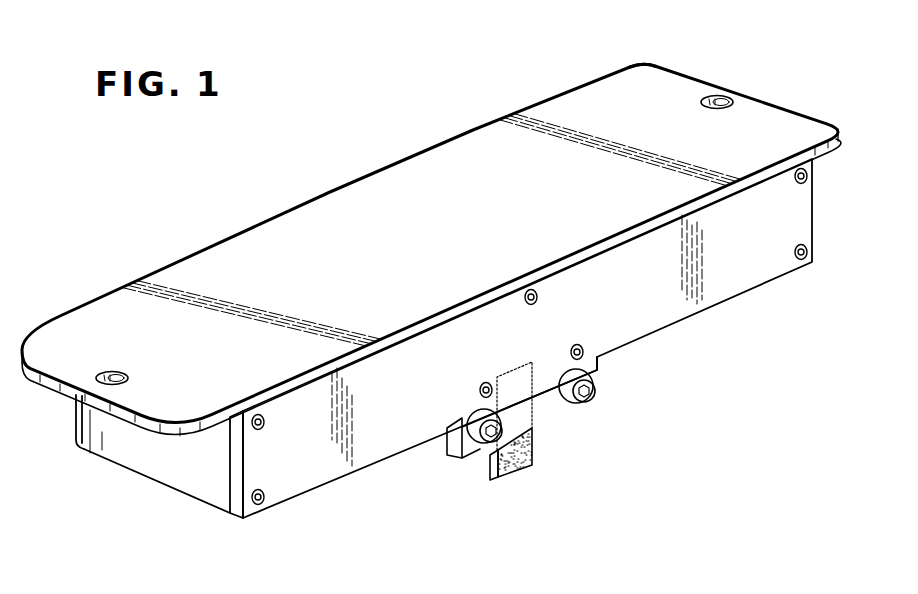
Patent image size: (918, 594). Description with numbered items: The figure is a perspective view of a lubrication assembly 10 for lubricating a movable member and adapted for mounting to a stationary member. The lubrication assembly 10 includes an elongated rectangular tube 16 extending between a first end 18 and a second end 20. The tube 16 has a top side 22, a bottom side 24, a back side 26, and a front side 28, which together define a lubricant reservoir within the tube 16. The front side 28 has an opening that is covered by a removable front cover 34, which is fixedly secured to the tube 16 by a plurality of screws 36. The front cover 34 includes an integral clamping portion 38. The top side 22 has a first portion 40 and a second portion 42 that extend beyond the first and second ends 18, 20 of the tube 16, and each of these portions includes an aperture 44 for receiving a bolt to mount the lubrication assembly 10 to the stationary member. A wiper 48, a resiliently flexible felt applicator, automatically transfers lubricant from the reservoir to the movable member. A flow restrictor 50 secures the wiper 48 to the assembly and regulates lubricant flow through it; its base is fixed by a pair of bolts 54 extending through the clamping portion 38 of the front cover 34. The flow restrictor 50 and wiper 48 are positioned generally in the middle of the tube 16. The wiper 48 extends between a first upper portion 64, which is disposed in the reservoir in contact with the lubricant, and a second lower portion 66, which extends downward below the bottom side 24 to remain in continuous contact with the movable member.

The lubrication assembly 10 is at (372, 122).
The elongated rectangular tube 16 is at (205, 251).
The first end 18 is at (140, 455).
The second end 20 is at (813, 215).
The top side 22 is at (458, 157).
The bottom side 24 is at (172, 505).
The back side 26 is at (76, 412).
The front side 28 is at (720, 283).
The removable front cover 34 is at (643, 228).
The screws 36 is at (813, 176).
The clamping portion 38 is at (545, 412).
The first portion 40 is at (62, 330).
The second portion 42 is at (640, 70).
The aperture 44 is at (116, 370).
The wiper 48 is at (490, 466).
The flow restrictor 50 is at (602, 428).
The bolts 54 is at (600, 396).
The first upper portion 64 is at (534, 360).
The second lower portion 66 is at (520, 478).